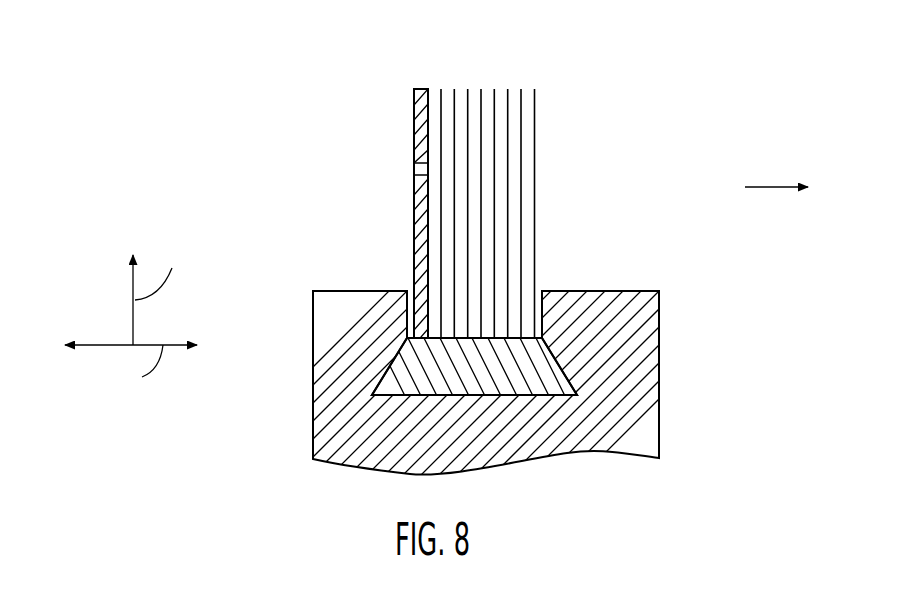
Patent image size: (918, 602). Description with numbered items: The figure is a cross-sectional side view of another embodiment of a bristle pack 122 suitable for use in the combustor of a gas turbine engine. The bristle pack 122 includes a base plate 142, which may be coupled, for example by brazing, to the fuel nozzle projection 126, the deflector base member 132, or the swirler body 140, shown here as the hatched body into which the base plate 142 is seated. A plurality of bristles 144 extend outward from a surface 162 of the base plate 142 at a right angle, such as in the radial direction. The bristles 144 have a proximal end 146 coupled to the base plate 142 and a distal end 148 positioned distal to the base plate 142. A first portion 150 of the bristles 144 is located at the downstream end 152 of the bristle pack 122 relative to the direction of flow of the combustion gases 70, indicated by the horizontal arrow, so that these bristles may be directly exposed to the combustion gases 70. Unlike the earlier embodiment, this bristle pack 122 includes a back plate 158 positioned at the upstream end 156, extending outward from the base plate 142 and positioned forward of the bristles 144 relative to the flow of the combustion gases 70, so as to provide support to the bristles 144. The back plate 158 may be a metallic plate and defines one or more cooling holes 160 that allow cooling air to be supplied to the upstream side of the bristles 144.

The combustion gases 70 is at (768, 190).
The bristle pack 122 is at (185, 105).
The fuel nozzle projection 126 is at (448, 332).
The deflector base member 132 is at (448, 332).
The swirler body 140 is at (313, 393).
The base plate 142 is at (407, 362).
The bristles 144 is at (494, 180).
The proximal end 146 is at (413, 107).
The distal end 148 is at (494, 180).
The first portion of the bristles 150 is at (460, 92).
The downstream end 152 is at (548, 256).
The upstream end 156 is at (370, 202).
The back plate 158 is at (370, 202).
The cooling hole 160 is at (413, 168).
The surface 162 is at (502, 338).